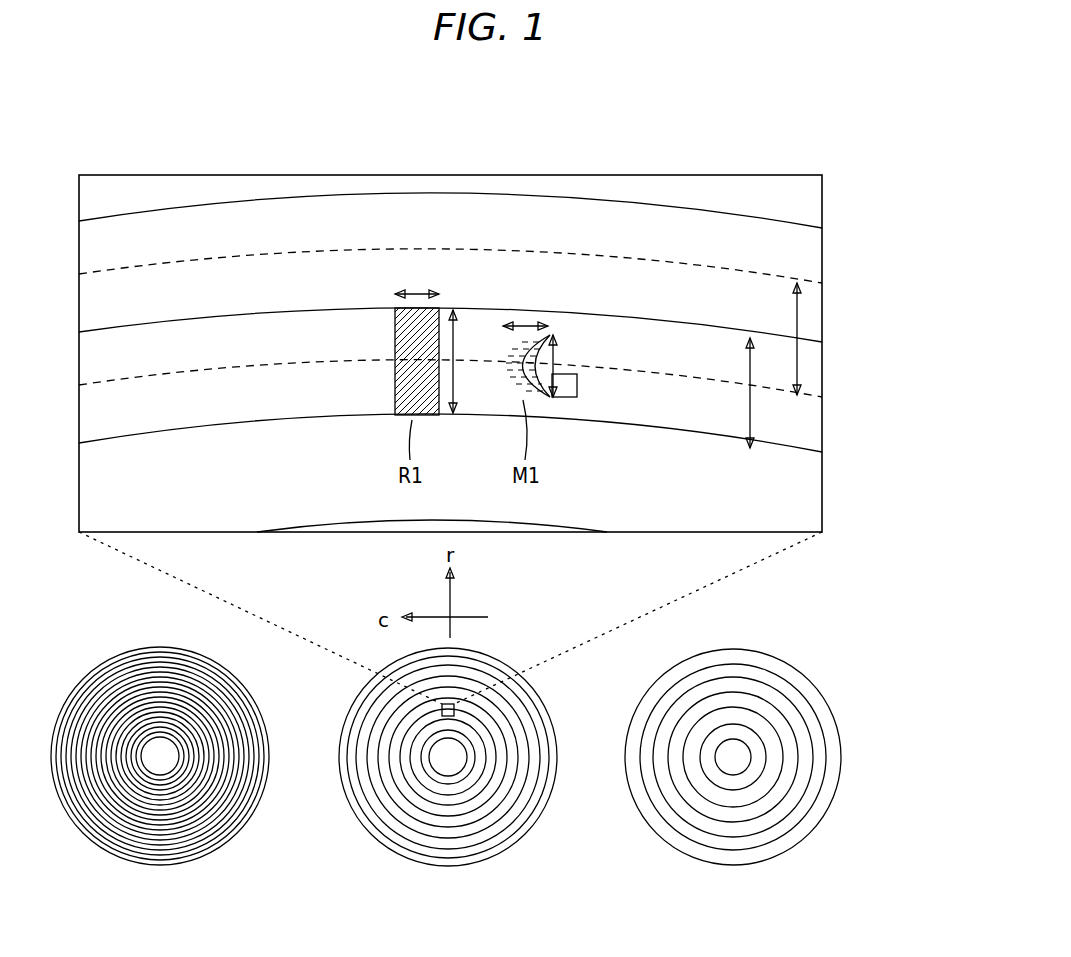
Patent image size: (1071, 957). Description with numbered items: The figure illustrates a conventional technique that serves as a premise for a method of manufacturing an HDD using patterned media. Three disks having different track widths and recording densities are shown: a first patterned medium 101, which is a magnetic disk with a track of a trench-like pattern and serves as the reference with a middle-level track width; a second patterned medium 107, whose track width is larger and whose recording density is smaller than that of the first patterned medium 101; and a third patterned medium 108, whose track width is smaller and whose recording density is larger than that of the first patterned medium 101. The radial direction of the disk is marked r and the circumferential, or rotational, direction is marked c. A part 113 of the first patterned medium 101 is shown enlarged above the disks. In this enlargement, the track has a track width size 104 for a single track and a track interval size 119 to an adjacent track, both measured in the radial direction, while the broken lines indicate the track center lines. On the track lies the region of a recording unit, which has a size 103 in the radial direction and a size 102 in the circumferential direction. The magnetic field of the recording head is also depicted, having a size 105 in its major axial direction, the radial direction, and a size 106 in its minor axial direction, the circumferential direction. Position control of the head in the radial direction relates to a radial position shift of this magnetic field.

The first patterned medium (D1) 101 is at (455, 850).
The size (A2) 102 is at (413, 290).
The size (A1) 103 is at (455, 350).
The track width size (T1) 104 is at (745, 405).
The size (B1) 105 is at (553, 352).
The size (B2) 106 is at (523, 320).
The second patterned medium (D2) 107 is at (737, 865).
The third patterned medium (D3) 108 is at (160, 865).
The part of patterned medium 113 is at (443, 717).
The track interval size (T2) 119 is at (797, 320).